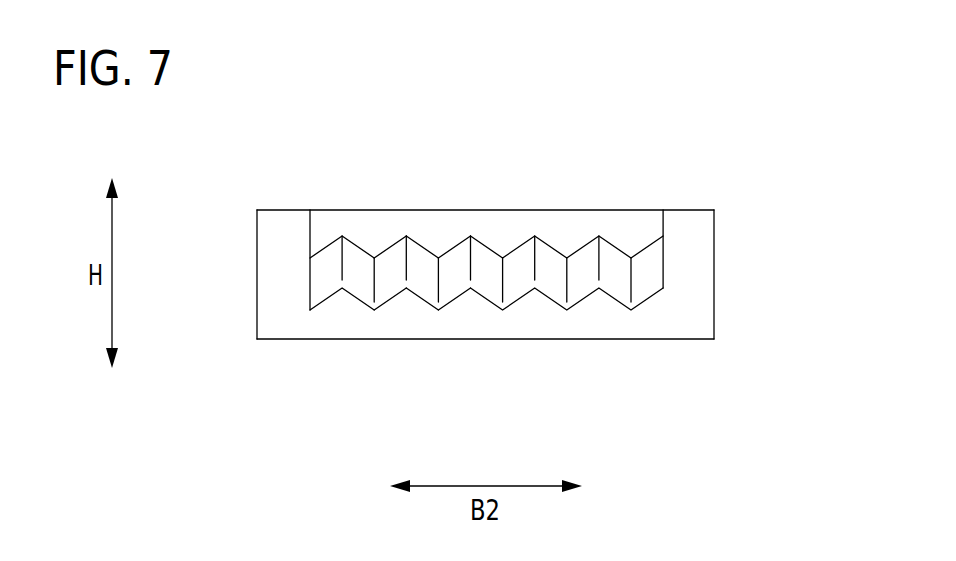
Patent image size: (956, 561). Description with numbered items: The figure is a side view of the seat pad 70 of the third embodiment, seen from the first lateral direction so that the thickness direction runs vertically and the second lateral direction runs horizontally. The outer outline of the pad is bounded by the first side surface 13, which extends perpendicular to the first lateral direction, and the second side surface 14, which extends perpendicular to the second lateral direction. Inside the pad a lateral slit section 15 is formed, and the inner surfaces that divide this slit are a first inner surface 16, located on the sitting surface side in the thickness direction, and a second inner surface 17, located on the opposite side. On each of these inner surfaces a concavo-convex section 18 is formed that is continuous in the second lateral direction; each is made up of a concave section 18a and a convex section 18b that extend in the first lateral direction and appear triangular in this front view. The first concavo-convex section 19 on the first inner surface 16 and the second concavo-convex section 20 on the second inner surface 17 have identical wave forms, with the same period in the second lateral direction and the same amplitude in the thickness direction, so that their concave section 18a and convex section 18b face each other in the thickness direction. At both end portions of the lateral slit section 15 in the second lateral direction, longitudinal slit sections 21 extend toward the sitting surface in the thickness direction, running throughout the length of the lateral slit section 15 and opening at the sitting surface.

The seat pad 70 is at (725, 161).
The first side surface 13 is at (700, 258).
The second side surface 14 is at (714, 287).
The lateral slit section 15 is at (307, 274).
The first inner surface 16 is at (552, 256).
The second inner surface 17 is at (590, 291).
The concavo-convex section 18 is at (498, 141).
The concave section 18a is at (407, 238).
The convex section 18b is at (442, 256).
The first concavo-convex section 19 is at (486, 198).
The second concavo-convex section 20 is at (486, 351).
The longitudinal slit section 21 is at (322, 200).